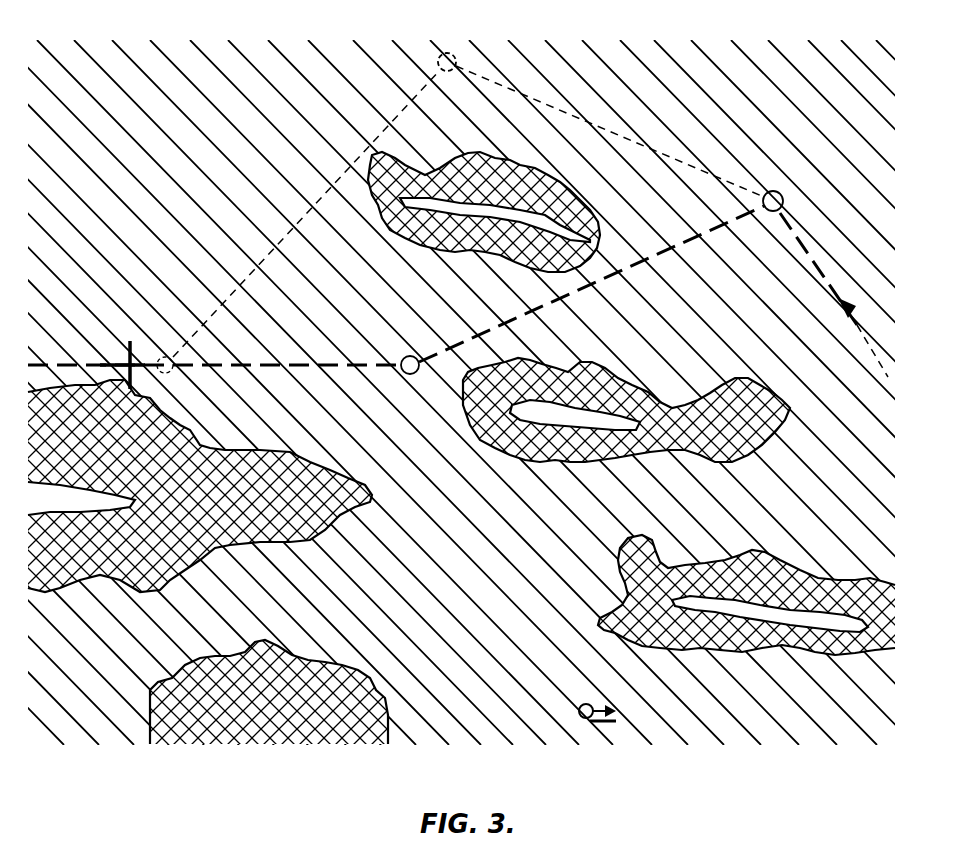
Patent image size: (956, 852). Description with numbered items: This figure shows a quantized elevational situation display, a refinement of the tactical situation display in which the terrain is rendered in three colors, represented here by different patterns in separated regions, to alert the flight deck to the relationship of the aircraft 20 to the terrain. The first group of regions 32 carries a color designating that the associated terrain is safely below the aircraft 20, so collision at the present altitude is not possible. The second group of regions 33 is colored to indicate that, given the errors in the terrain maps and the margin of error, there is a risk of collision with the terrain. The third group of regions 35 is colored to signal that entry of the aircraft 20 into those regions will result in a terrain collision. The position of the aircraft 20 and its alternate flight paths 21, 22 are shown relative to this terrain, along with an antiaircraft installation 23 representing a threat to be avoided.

The aircraft 20 is at (105, 364).
The alternate flight path 21 is at (306, 212).
The alternate flight path 22 is at (330, 368).
The antiaircraft installation 23 is at (618, 708).
The first group of regions 32 is at (122, 44).
The second group of regions 33 is at (494, 181).
The third group of regions 35 is at (510, 217).